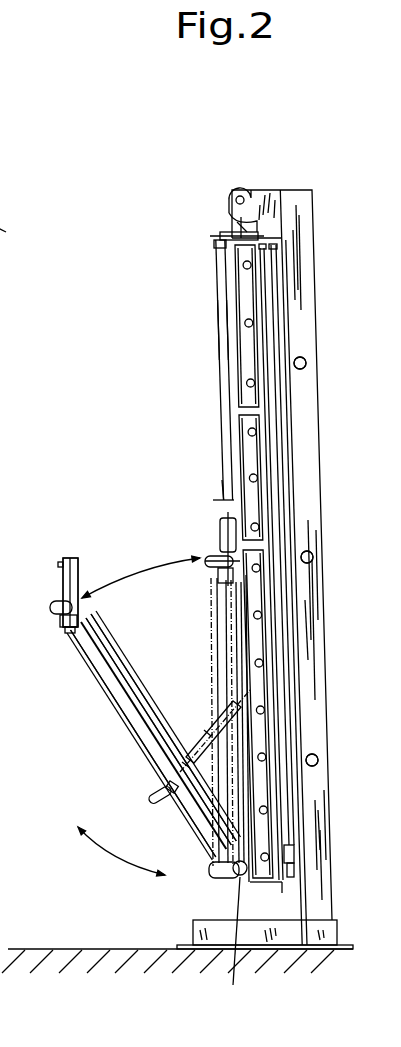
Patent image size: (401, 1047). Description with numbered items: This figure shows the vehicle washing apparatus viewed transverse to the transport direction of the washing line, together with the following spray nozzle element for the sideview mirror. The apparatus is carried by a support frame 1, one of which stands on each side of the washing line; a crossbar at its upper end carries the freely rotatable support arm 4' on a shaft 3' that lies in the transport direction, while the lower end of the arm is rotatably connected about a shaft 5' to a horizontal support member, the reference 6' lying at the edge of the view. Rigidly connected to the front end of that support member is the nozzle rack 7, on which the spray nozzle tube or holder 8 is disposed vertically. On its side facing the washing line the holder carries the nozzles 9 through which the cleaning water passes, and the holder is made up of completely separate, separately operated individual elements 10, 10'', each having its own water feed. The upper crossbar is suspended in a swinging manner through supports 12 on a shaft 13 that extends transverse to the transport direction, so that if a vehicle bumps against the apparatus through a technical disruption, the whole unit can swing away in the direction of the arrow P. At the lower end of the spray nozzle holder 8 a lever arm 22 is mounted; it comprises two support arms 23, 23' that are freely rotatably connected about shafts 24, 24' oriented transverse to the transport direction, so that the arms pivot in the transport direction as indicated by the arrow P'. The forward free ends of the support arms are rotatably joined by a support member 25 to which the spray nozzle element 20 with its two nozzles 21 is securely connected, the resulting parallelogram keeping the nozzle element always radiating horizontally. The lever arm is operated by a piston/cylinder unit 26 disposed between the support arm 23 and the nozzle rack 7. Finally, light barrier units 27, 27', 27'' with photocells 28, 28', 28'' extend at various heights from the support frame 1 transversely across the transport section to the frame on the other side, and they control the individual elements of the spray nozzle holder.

The support frame 1 is at (303, 269).
The shaft 3' is at (224, 192).
The support arm 4' is at (218, 332).
The shaft 5' is at (269, 596).
The adjacent element 6' is at (6, 215).
The nozzle rack 7 is at (237, 303).
The spray nozzle tube or holder 8 is at (250, 457).
The nozzles 9 is at (246, 477).
The individual element 10 is at (220, 643).
The individual element 10'' is at (204, 326).
The supports 12 is at (246, 218).
The shaft 13 is at (237, 195).
The spray nozzle element 20 is at (85, 570).
The nozzles 21 is at (220, 552).
The lever arm 22 is at (100, 713).
The support arm 23 is at (134, 720).
The support arm 23' is at (170, 728).
The shaft 24 is at (202, 887).
The shaft 24' is at (238, 947).
The support member 25 is at (205, 556).
The piston/cylinder unit 26 is at (207, 737).
The light barrier unit 27 is at (334, 775).
The light barrier unit 27' is at (329, 574).
The light barrier unit 27'' is at (177, 379).
The photocell 28 is at (333, 744).
The photocell 28' is at (328, 542).
The photocell 28'' is at (323, 344).
The arrow P is at (121, 860).
The arrow P' is at (141, 563).